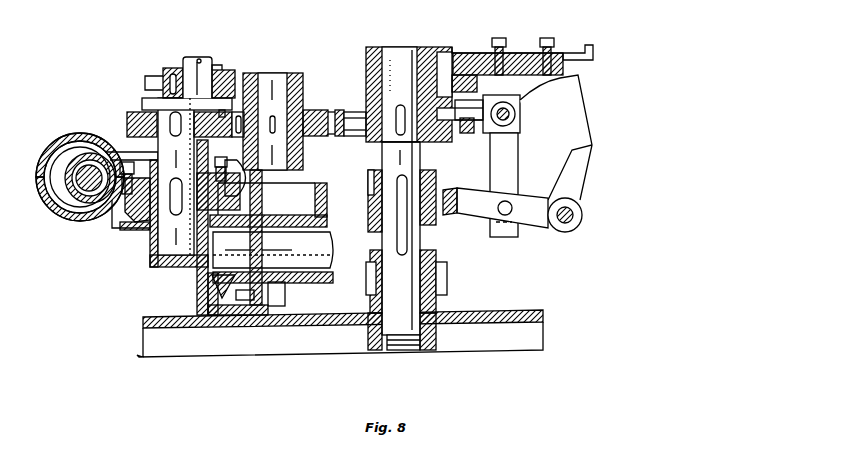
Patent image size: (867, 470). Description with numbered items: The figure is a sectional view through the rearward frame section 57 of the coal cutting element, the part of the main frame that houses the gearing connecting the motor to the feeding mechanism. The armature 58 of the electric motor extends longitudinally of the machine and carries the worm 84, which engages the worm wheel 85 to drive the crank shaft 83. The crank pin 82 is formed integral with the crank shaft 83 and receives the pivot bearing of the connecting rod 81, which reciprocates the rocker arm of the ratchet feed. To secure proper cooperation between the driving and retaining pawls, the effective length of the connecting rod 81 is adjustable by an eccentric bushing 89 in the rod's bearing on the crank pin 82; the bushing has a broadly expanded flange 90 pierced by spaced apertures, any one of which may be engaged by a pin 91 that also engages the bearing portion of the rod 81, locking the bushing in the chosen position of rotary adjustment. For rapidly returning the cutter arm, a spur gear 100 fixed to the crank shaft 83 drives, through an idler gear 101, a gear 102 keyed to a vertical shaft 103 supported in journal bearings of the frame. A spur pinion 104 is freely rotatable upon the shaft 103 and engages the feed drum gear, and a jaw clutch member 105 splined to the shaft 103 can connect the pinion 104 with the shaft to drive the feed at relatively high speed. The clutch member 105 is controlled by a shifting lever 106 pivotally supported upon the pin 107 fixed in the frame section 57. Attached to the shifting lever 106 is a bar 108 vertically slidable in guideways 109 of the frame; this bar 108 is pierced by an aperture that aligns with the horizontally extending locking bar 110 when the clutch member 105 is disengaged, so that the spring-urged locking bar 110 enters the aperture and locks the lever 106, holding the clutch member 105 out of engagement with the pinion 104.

The rearward frame section 57 is at (273, 338).
The armature 58 is at (84, 198).
The connecting rod 81 is at (150, 77).
The crank pin 82 is at (198, 62).
The crank shaft 83 is at (165, 127).
The worm 84 is at (62, 160).
The worm wheel 85 is at (250, 178).
The eccentric bushing 89 is at (216, 66).
The flange 90 is at (247, 75).
The pin 91 is at (168, 73).
The spur gear 100 is at (127, 125).
The idler gear 101 is at (311, 110).
The gear 102 is at (354, 112).
The vertical shaft 103 is at (399, 66).
The spur pinion 104 is at (368, 290).
The jaw clutch member 105 is at (369, 218).
The shifting lever 106 is at (529, 200).
The pin 107 is at (582, 215).
The bar 108 is at (493, 165).
The guideways 109 is at (521, 118).
The locking bar 110 is at (503, 114).